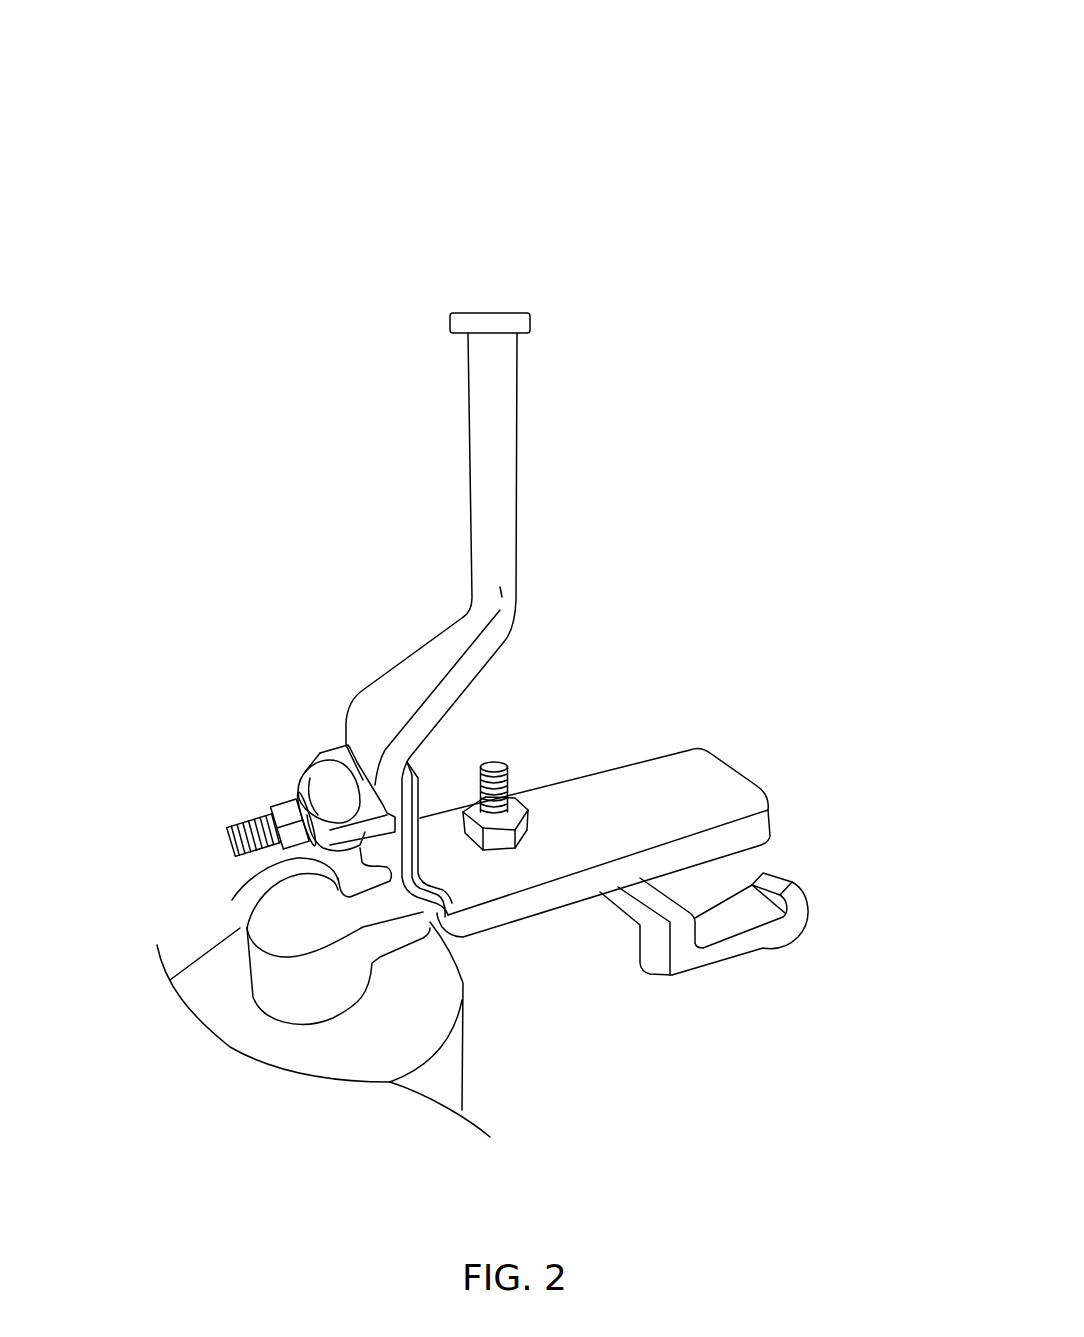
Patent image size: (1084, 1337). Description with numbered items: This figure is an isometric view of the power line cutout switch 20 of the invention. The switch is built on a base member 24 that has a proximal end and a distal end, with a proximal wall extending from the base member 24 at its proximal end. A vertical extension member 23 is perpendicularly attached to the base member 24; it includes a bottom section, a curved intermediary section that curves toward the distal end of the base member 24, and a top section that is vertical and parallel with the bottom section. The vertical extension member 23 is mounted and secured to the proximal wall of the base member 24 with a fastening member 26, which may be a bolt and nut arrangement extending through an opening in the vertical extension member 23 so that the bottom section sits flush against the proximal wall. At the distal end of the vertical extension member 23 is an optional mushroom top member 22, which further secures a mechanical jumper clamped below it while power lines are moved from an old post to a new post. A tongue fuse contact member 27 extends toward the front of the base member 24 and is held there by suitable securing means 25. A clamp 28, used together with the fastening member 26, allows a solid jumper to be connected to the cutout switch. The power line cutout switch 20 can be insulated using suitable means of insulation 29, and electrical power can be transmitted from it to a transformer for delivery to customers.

The power line cutout switch 20 is at (646, 172).
The mushroom top member 22 is at (508, 327).
The vertical extension member 23 is at (502, 535).
The base member 24 is at (687, 777).
The securing means 25 is at (513, 793).
The fastening member 26 is at (267, 810).
The tongue fuse contact member 27 is at (730, 923).
The clamp 28 is at (232, 900).
The means of insulation 29 is at (447, 1073).